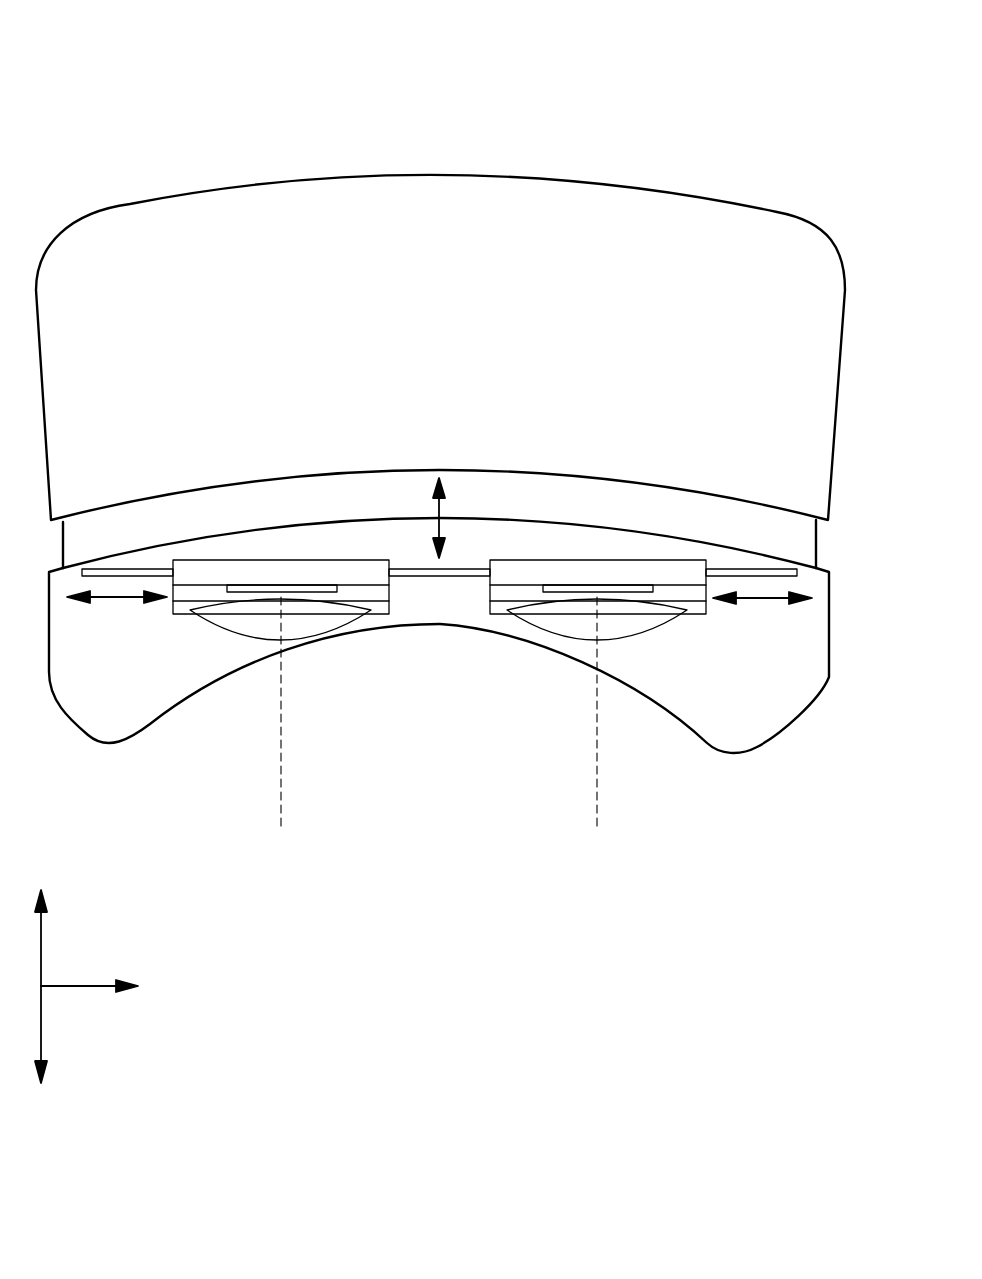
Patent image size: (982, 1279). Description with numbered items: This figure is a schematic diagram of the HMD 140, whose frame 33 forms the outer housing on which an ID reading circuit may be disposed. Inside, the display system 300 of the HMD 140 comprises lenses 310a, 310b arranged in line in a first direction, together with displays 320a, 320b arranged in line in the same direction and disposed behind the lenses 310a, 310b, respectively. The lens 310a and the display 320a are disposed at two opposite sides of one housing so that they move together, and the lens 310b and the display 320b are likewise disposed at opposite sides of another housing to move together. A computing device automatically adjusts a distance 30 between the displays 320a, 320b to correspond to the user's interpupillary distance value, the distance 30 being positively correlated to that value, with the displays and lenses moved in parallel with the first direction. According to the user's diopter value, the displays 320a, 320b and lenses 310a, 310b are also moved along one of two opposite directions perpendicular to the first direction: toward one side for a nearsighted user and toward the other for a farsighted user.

The HMD 140 is at (111, 44).
The frame 33 is at (605, 200).
The display system 300 is at (439, 781).
The lens 310a is at (307, 613).
The lens 310b is at (620, 613).
The display 320a is at (240, 588).
The display 320b is at (553, 588).
The distance 30 is at (580, 820).